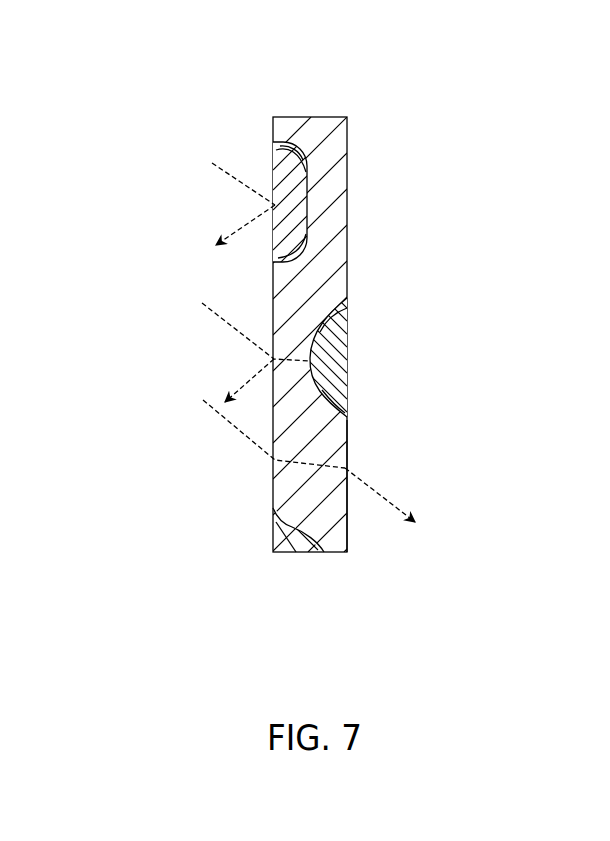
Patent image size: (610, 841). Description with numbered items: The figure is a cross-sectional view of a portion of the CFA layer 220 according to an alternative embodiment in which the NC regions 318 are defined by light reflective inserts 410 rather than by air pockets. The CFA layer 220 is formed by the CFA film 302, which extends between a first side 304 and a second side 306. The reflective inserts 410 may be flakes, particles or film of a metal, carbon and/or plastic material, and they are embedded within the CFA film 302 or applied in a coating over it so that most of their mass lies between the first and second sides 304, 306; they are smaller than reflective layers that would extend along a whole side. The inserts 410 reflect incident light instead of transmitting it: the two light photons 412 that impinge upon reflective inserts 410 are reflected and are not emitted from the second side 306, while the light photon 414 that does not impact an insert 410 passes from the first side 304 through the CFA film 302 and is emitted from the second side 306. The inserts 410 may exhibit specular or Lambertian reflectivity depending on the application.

The CFA layer 220 is at (411, 106).
The CFA film 302 is at (343, 248).
The first side 304 is at (275, 493).
The second side 306 is at (347, 440).
The NC region 318 is at (282, 158).
The reflective insert 410 is at (273, 190).
The light photon 412 is at (240, 183).
The light photon 414 is at (218, 412).